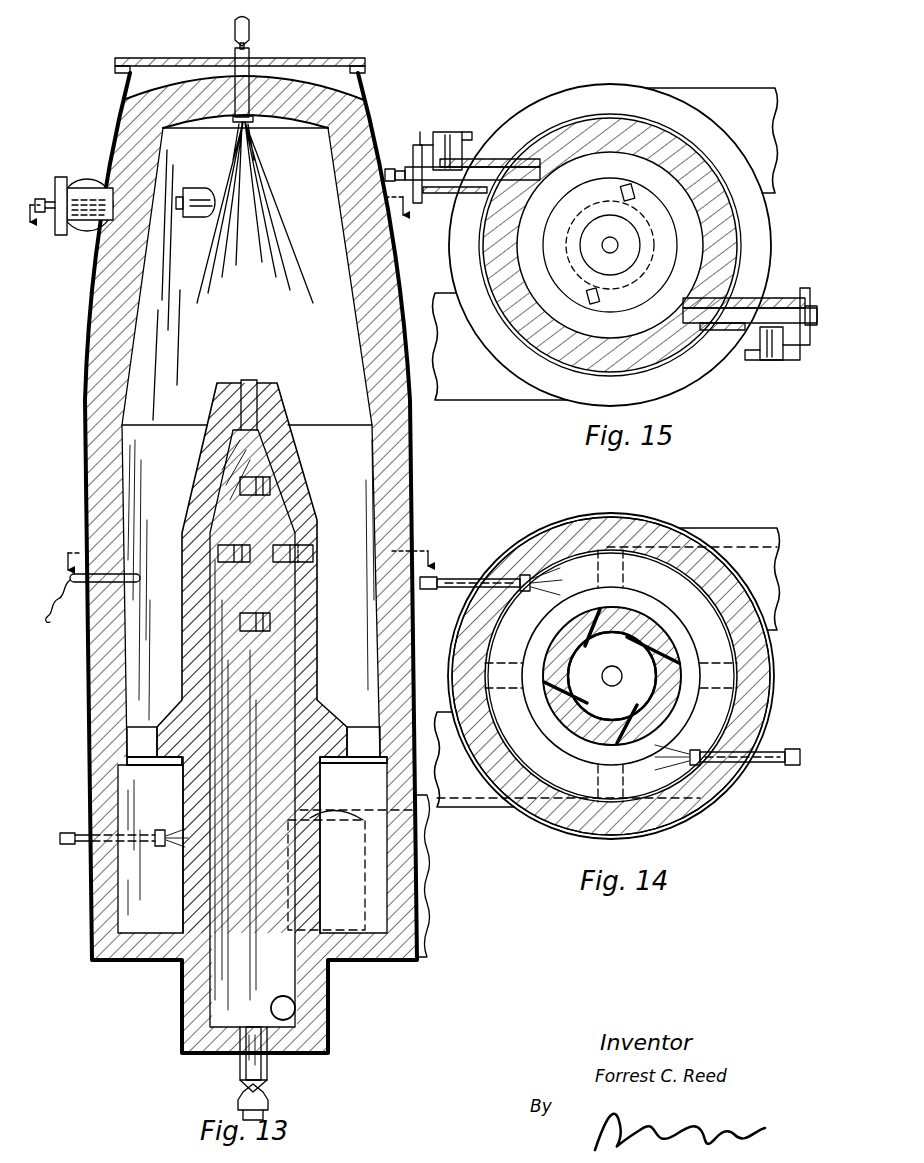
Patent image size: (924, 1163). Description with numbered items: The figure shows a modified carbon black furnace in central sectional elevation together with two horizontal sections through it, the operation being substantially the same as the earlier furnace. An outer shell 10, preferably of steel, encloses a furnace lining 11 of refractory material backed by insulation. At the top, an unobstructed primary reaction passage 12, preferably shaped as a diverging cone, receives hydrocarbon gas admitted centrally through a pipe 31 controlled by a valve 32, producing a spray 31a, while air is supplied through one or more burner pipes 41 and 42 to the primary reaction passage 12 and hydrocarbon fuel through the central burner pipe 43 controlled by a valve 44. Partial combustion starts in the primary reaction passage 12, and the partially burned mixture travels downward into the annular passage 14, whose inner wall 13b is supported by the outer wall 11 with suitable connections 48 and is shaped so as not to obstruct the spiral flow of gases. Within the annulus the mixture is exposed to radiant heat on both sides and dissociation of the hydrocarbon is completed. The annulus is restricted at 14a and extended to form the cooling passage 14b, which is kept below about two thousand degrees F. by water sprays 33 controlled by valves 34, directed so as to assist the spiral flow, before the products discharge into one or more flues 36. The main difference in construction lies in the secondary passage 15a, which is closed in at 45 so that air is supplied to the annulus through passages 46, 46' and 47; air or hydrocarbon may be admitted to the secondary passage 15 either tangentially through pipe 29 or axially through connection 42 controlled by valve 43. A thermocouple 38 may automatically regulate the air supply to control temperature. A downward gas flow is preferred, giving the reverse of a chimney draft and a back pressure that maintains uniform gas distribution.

In FIG. 13, the outer shell 10 is at (90, 368).
In FIG. 13, the furnace lining 11 is at (118, 340).
In FIG. 13, the unobstructed cylindrical passage 12 is at (322, 277).
In FIG. 13, the inner wall of annulus 13b is at (185, 658).
In FIG. 13, the annular passage 14 is at (465, 494).
In FIG. 13, the restriction of annulus 14a is at (143, 748).
In FIG. 14, the restriction of annulus 14a is at (632, 565).
In FIG. 13, the cooling passage 14b is at (150, 790).
In FIG. 13, the inner passage 15 is at (221, 223).
In FIG. 13, the secondary passage 15a is at (265, 680).
In FIG. 14, the secondary passage 15a is at (634, 646).
In FIG. 13, the pipe 29 is at (283, 1008).
In FIG. 13, the pipe 31 is at (252, 52).
In FIG. 13, the fuel spray 31a is at (255, 212).
In FIG. 13, the valve 32 is at (236, 46).
In FIG. 13, the water spray 33 is at (160, 848).
In FIG. 14, the water spray 33 is at (524, 592).
In FIG. 13, the valve 34 is at (72, 843).
In FIG. 14, the valve 34 is at (440, 588).
In FIG. 13, the outer flue 36 is at (430, 915).
In FIG. 14, the outer flue 36 is at (740, 565).
In FIG. 13, the thermocouple 38 is at (90, 606).
In FIG. 15, the burner pipe 41 is at (446, 136).
In FIG. 13, the connection 42 is at (255, 1060).
In FIG. 15, the connection 42 is at (447, 192).
In FIG. 14, the connection 42 is at (614, 678).
In FIG. 13, the central burner pipe 43 is at (252, 1090).
In FIG. 15, the central burner pipe 43 is at (470, 166).
In FIG. 13, the valve 44 is at (52, 196).
In FIG. 15, the valve 44 is at (406, 172).
In FIG. 13, the closure of secondary passage 45 is at (305, 478).
In FIG. 13, the passage 46 is at (265, 569).
In FIG. 15, the passage 46 is at (651, 193).
In FIG. 14, the passage 46 is at (611, 676).
In FIG. 13, the passage 46' is at (256, 578).
In FIG. 15, the passage 46' is at (613, 312).
In FIG. 14, the passage 46' is at (611, 676).
In FIG. 13, the passage 47 is at (245, 382).
In FIG. 15, the passage 47 is at (612, 250).
In FIG. 13, the connections 48 is at (145, 732).
In FIG. 14, the connections 48 is at (640, 538).